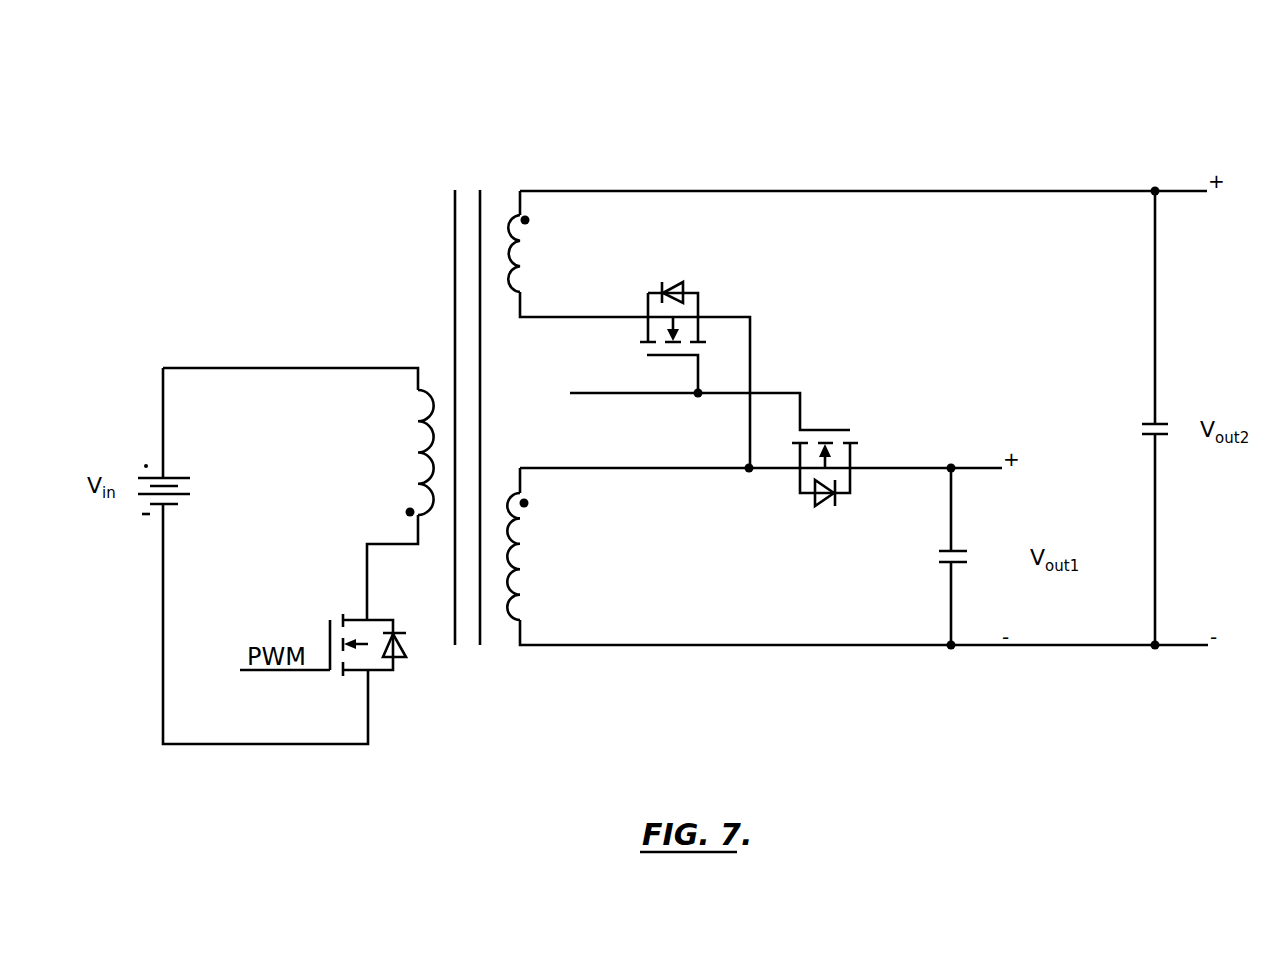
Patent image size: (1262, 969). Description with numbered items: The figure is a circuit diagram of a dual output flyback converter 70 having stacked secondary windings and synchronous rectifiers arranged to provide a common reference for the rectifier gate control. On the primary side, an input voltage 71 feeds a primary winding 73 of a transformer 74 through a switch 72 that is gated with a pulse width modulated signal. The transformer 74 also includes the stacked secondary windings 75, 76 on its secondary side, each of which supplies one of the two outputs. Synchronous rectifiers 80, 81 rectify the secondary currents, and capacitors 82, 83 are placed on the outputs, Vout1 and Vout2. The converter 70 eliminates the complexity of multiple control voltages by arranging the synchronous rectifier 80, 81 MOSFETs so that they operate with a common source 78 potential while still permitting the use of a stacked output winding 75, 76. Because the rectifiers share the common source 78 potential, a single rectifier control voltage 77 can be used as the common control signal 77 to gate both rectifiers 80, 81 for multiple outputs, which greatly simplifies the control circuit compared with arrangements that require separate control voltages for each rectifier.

The dual output flyback converter 70 is at (858, 107).
The input voltage 71 is at (122, 437).
The switch 72 is at (402, 686).
The primary winding 73 is at (397, 432).
The transformer 74 is at (410, 228).
The stacked secondary winding 75 is at (552, 563).
The stacked secondary winding 76 is at (538, 241).
The common control signal 77 is at (592, 393).
The common reference 78 is at (749, 473).
The synchronous rectifier 80 is at (722, 292).
The synchronous rectifier 81 is at (872, 418).
The capacitor 82 is at (942, 562).
The capacitor 83 is at (1150, 437).